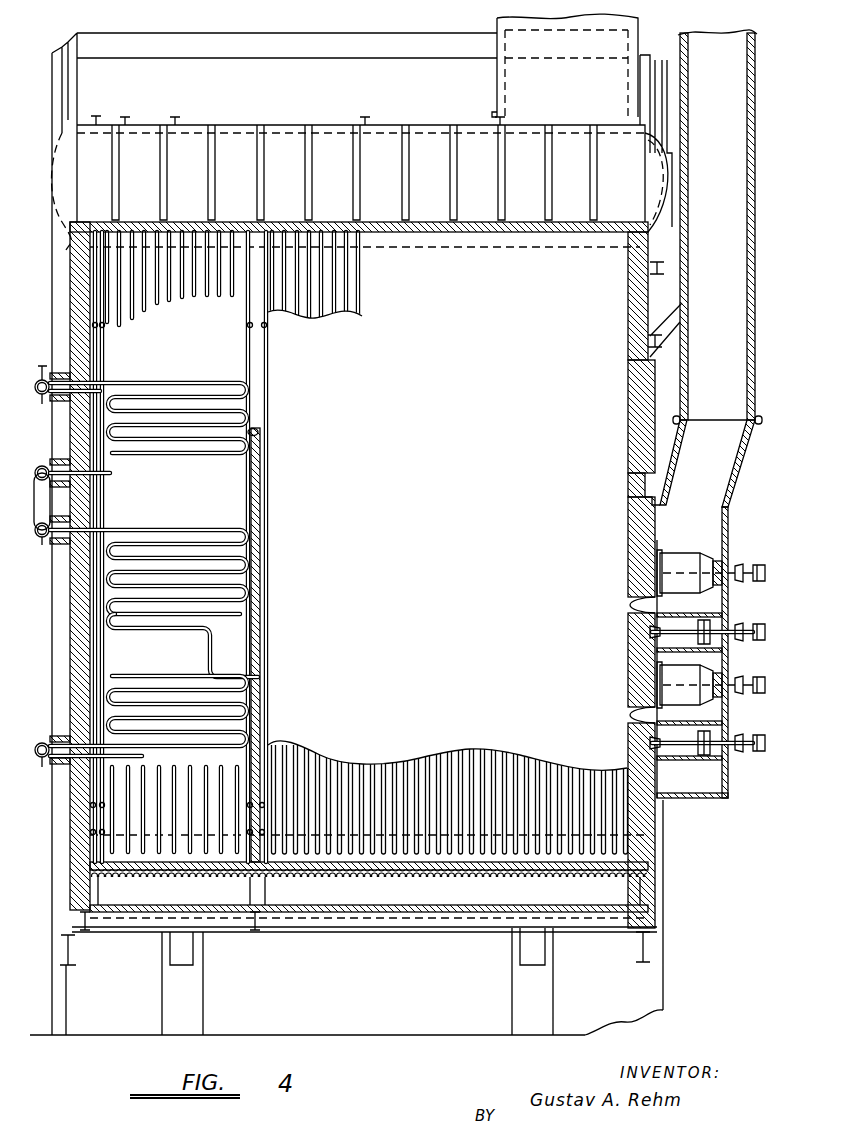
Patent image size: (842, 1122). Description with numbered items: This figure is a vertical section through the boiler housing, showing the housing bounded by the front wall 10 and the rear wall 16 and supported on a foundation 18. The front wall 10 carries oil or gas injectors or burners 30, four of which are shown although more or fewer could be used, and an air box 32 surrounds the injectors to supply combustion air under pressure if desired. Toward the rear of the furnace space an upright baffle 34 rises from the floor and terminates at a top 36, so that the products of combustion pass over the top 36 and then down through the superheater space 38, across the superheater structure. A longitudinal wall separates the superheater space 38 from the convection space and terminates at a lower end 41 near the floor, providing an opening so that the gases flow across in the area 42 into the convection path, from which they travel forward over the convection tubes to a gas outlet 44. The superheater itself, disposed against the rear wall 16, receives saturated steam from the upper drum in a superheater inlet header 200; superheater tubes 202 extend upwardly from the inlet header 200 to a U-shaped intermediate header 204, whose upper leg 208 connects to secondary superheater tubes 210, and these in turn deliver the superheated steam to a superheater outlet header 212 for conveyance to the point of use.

The front wall 10 is at (640, 815).
The rear wall 16 is at (72, 674).
The foundation 18 is at (540, 994).
The burners 30 is at (690, 556).
The air box 32 is at (714, 483).
The upright baffle 34 is at (270, 560).
The top of baffle 36 is at (256, 431).
The superheater space 38 is at (220, 507).
The lower end of longitudinal wall 41 is at (225, 677).
The gas crossover area 42 is at (133, 790).
The gas outlet 44 is at (610, 23).
The superheater inlet header 200 is at (40, 744).
The superheater tubes 202 is at (245, 717).
The intermediate header 204 is at (40, 540).
The upper leg 208 is at (40, 465).
The secondary superheater tubes 210 is at (177, 458).
The superheater outlet header 212 is at (40, 379).